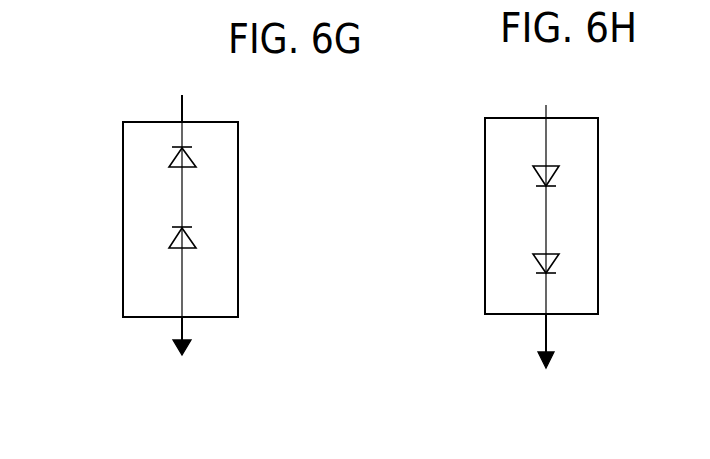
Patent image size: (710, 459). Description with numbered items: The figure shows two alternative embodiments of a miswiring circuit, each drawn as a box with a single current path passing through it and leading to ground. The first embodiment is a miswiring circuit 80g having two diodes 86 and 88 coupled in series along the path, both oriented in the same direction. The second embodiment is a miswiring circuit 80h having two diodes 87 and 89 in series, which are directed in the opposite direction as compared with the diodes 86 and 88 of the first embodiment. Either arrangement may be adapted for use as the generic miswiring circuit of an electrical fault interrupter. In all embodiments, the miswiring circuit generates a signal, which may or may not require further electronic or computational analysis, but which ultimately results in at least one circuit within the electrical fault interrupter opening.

In FIG. 6G, the miswiring circuit 80g is at (138, 150).
In FIG. 6H, the miswiring circuit 80h is at (500, 148).
In FIG. 6G, the diode 86 is at (193, 161).
In FIG. 6G, the diode 88 is at (190, 241).
In FIG. 6H, the diode 87 is at (556, 171).
In FIG. 6H, the diode 89 is at (553, 263).